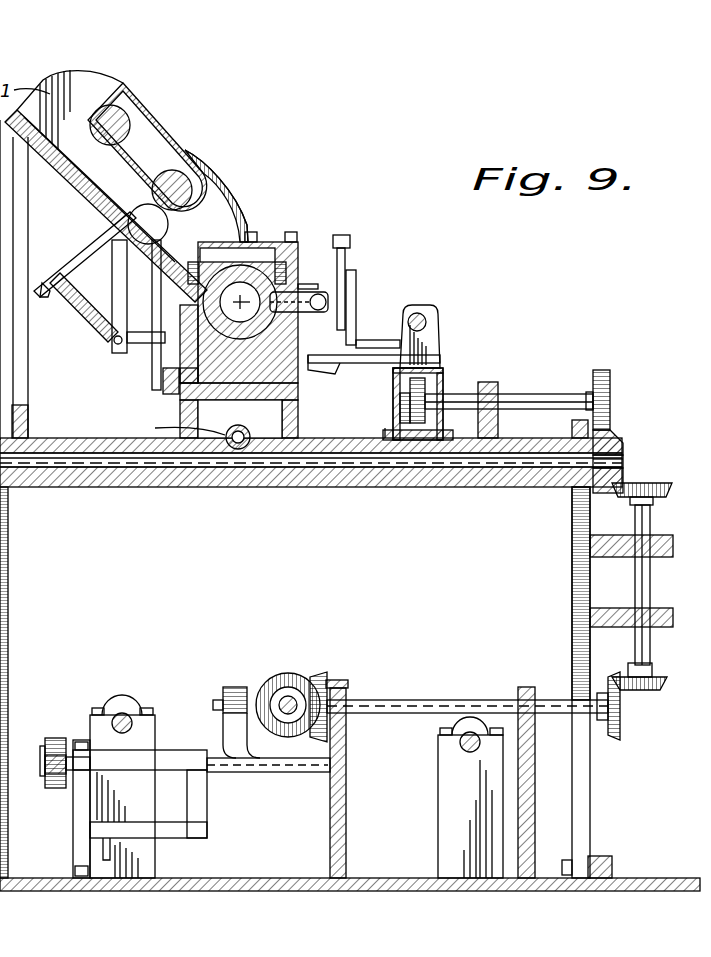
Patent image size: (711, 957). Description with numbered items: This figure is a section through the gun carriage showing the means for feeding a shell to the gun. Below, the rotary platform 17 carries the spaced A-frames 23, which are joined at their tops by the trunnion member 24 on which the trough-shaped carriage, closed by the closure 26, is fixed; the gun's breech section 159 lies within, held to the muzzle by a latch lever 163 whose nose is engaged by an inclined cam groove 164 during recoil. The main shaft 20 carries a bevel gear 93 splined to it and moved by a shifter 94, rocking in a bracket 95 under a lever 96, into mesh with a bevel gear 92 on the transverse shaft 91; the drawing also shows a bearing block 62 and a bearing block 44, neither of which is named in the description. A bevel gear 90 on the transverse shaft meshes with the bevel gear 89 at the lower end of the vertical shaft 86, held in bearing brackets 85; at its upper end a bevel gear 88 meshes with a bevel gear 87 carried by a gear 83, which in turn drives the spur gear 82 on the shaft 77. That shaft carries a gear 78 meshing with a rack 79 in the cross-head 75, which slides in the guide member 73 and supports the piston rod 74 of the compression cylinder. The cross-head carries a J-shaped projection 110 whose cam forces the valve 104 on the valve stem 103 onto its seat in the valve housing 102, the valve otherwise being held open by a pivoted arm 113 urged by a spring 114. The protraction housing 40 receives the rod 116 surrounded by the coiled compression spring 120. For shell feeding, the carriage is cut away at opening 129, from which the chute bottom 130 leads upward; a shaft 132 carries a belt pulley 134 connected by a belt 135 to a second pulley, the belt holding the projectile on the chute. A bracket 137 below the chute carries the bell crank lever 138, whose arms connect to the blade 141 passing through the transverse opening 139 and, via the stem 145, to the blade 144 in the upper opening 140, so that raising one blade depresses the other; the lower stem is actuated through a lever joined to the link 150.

The rotary platform 17 is at (372, 878).
The main shaft 20 is at (290, 696).
The A-frame 23 is at (8, 566).
The trunnion member 24 is at (258, 470).
The closure 26 is at (295, 252).
The housing 40 is at (246, 430).
The bearing block 44 is at (462, 758).
The bearing block 62 is at (126, 716).
The guide member 73 is at (384, 430).
The piston rod 74 is at (417, 312).
The cross-head 75 is at (428, 348).
The shaft 77 is at (518, 394).
The gear 78 is at (426, 382).
The rack 79 is at (425, 413).
The spur gear 82 is at (610, 384).
The gear 83 is at (603, 494).
The bearing bracket 85 is at (665, 607).
The vertical shaft 86 is at (640, 588).
The bevel gear 87 is at (624, 443).
The bevel gear 88 is at (660, 483).
The bevel gear 89 is at (627, 676).
The bevel gear 90 is at (622, 713).
The transverse shaft 91 is at (428, 700).
The bevel gear 92 is at (320, 680).
The bevel gear 93 is at (275, 680).
The shifter 94 is at (278, 773).
The bracket 95 is at (200, 810).
The lever 96 is at (55, 788).
The valve housing 102 is at (322, 296).
The valve stem 103 is at (260, 300).
The valve 104 is at (265, 306).
The J-shaped projection 110 is at (380, 340).
The pivoted arm 113 is at (330, 368).
The spring 114 is at (372, 365).
The rod 116 is at (232, 447).
The coiled compression spring 120 is at (165, 424).
The opening 129 is at (248, 250).
The chute bottom 130 is at (85, 205).
The shaft 132 is at (228, 190).
The belt pulley 134 is at (225, 170).
The belt 135 is at (165, 138).
The bracket 137 is at (112, 290).
The bell crank lever 138 is at (78, 325).
The transverse opening 139 is at (150, 268).
The opening 140 is at (106, 236).
The blade 141 is at (158, 310).
The blade 144 is at (140, 205).
The stem 145 is at (56, 272).
The link 150 is at (160, 390).
The breech section 159 is at (178, 380).
The latch lever 163 is at (352, 241).
The inclined cam groove 164 is at (228, 248).